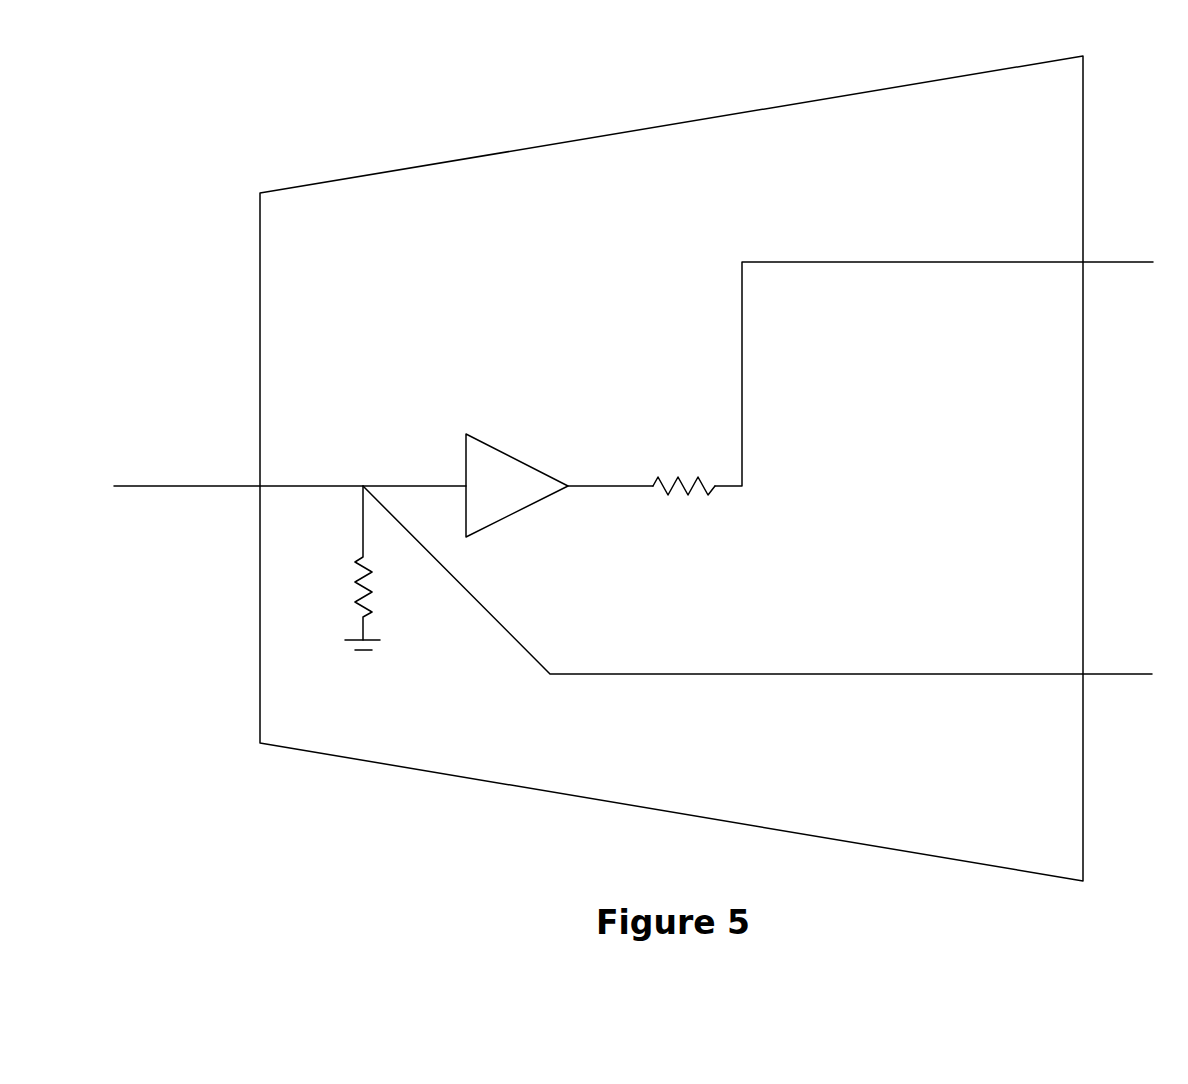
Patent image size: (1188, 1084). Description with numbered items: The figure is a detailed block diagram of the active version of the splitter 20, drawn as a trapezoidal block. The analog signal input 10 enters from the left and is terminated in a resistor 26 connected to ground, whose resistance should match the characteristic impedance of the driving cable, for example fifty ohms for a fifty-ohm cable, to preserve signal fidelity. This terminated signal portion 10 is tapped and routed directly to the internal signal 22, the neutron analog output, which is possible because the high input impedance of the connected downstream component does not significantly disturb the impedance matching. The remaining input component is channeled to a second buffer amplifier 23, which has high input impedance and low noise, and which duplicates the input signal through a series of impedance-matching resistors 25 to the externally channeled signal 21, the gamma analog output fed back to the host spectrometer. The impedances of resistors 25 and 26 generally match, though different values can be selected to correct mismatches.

The analog signal input 10 is at (186, 473).
The splitter 20 is at (343, 162).
The externally channeled signal 21 is at (1120, 245).
The internal signal 22 is at (1128, 663).
The second buffer amplifier 23 is at (513, 440).
The impedance-matching resistors 25 is at (681, 463).
The resistor 26 is at (341, 588).